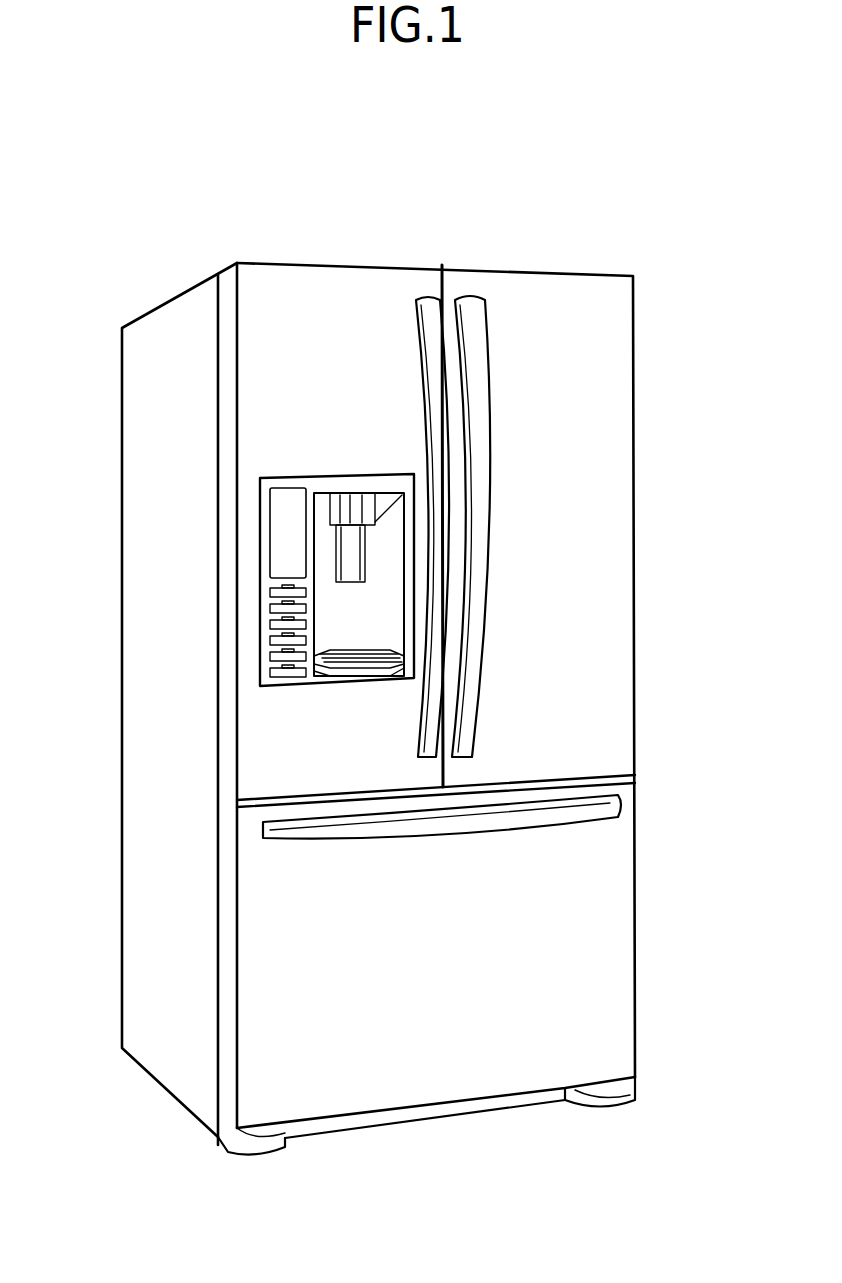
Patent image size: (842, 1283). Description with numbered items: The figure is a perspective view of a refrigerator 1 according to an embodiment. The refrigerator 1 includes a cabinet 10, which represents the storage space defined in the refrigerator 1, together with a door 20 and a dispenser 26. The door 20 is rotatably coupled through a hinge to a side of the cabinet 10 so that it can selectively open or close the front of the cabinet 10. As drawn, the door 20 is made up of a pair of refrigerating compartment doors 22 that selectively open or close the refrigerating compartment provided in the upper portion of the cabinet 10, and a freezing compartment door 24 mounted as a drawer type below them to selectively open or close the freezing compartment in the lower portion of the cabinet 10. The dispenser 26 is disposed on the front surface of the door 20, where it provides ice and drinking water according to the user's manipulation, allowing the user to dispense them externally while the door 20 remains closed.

The refrigerator 1 is at (538, 256).
The cabinet 10 is at (152, 423).
The door 20 is at (740, 492).
The refrigerating compartment doors 22 is at (340, 300).
The freezing compartment door 24 is at (607, 865).
The dispenser 26 is at (334, 613).